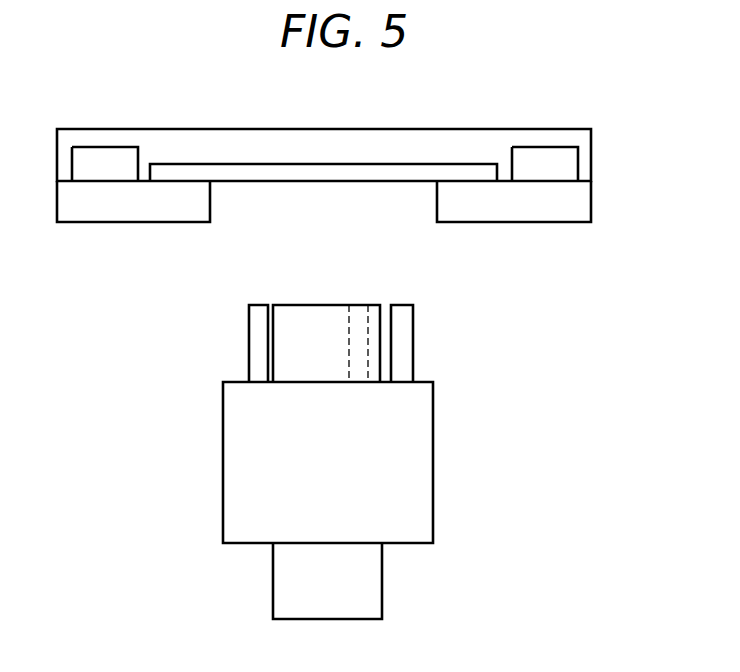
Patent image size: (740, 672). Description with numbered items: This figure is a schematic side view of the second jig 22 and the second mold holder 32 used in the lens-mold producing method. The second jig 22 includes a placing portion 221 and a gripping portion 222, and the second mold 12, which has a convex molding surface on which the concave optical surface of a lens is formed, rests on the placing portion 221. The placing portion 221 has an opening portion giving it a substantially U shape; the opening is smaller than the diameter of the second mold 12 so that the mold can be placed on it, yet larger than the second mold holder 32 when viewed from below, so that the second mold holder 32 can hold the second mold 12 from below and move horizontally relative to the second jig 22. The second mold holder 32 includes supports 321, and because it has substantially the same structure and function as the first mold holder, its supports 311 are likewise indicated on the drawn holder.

The second mold 12 is at (312, 172).
The second jig 22 is at (260, 143).
The placing portion 221 is at (120, 205).
The gripping portion 222 is at (105, 163).
The second mold holder 32 is at (146, 366).
The supports 311 is at (248, 330).
The supports 321 is at (308, 317).